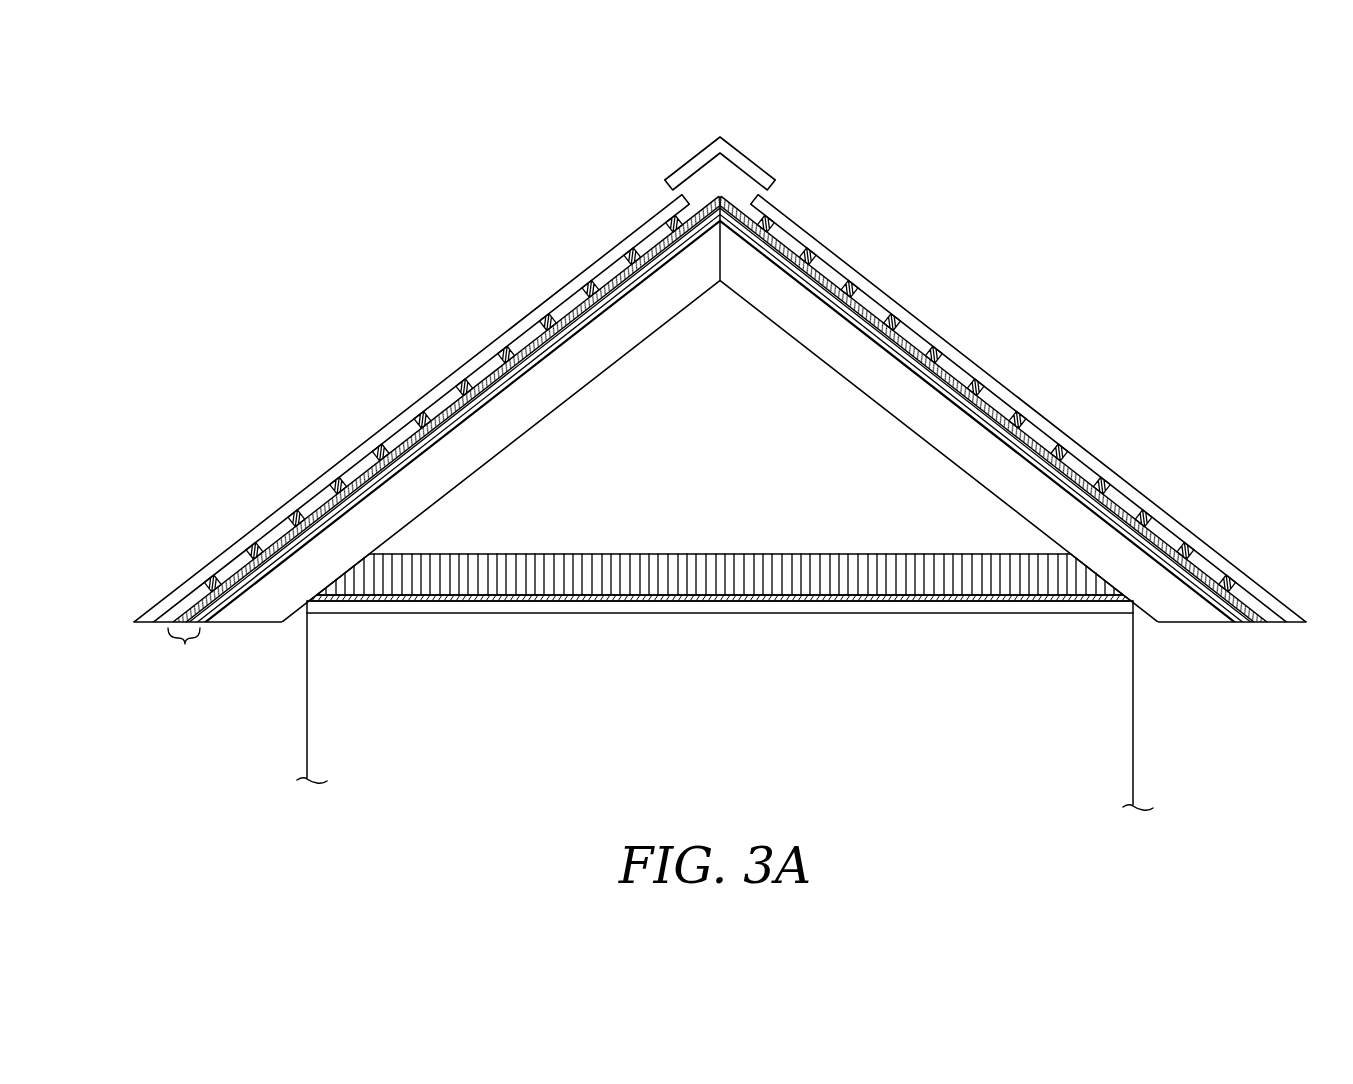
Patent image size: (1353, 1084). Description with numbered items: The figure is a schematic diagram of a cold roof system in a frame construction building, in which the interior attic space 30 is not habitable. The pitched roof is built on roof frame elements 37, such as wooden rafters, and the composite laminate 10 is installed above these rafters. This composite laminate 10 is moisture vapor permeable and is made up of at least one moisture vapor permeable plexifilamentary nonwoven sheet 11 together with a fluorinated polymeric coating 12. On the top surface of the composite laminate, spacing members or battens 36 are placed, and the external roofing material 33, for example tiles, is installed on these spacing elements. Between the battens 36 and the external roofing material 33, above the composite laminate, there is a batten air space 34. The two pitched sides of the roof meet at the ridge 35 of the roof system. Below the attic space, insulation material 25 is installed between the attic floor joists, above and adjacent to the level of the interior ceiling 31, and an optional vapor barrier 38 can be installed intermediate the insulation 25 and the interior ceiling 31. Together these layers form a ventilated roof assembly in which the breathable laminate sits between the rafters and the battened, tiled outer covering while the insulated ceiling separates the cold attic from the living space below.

The composite laminate 10 is at (185, 644).
The moisture vapor permeable plexifilamentary nonwoven sheet 11 is at (214, 606).
The fluorinated polymeric coating 12 is at (195, 603).
The insulation material 25 is at (722, 578).
The interior attic space 30 is at (828, 418).
The interior ceiling 31 is at (808, 614).
The external roofing material 33 is at (443, 380).
The batten air space 34 is at (560, 312).
The ridge 35 is at (754, 162).
The spacing members 36 is at (343, 485).
The pitched roof frame elements 37 is at (622, 337).
The vapor barrier 38 is at (620, 601).